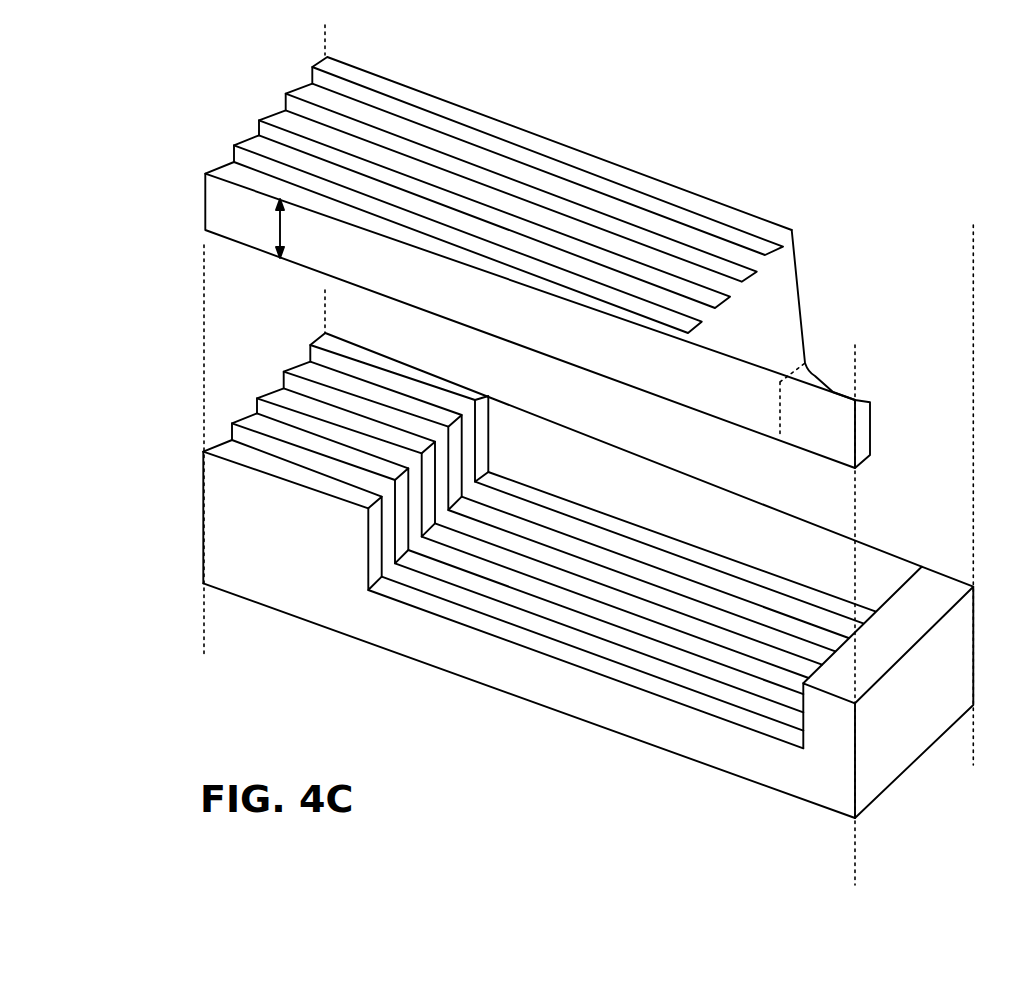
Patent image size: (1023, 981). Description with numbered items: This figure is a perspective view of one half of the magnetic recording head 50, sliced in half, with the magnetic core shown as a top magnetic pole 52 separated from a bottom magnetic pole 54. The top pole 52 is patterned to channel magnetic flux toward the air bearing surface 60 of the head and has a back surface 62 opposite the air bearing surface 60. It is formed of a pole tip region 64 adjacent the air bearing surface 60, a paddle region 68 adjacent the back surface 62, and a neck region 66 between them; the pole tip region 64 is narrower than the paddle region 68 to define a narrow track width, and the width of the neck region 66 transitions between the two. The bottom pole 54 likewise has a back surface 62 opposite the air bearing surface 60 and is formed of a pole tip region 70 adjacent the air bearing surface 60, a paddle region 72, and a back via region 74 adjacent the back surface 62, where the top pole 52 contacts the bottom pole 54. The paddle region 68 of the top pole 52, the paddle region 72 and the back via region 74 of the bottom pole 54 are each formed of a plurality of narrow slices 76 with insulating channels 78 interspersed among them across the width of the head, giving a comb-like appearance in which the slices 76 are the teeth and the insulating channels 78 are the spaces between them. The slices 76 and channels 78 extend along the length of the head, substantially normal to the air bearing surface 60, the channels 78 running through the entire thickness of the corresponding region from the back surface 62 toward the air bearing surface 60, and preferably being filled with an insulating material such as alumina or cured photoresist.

The magnetic recording head 50 is at (880, 125).
The top magnetic pole 52 is at (448, 98).
The bottom magnetic pole 54 is at (441, 668).
The air bearing surface 60 is at (898, 712).
The back surface 62 is at (203, 479).
The pole tip region 64 is at (799, 432).
The neck region 66 is at (709, 398).
The paddle region 68 is at (469, 314).
The pole tip region 70 is at (817, 728).
The paddle region 72 is at (684, 747).
The back via region 74 is at (309, 536).
The narrow slices 76 is at (297, 130).
The insulating channels 78 is at (277, 145).